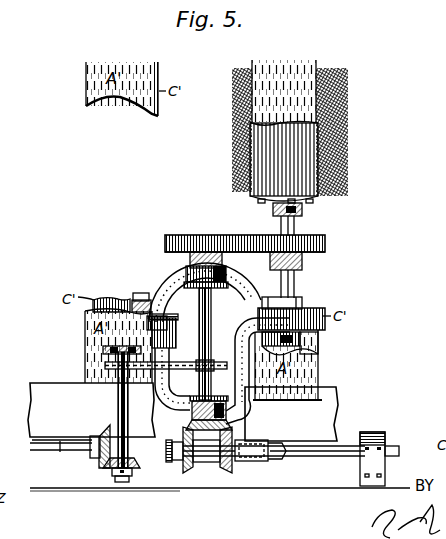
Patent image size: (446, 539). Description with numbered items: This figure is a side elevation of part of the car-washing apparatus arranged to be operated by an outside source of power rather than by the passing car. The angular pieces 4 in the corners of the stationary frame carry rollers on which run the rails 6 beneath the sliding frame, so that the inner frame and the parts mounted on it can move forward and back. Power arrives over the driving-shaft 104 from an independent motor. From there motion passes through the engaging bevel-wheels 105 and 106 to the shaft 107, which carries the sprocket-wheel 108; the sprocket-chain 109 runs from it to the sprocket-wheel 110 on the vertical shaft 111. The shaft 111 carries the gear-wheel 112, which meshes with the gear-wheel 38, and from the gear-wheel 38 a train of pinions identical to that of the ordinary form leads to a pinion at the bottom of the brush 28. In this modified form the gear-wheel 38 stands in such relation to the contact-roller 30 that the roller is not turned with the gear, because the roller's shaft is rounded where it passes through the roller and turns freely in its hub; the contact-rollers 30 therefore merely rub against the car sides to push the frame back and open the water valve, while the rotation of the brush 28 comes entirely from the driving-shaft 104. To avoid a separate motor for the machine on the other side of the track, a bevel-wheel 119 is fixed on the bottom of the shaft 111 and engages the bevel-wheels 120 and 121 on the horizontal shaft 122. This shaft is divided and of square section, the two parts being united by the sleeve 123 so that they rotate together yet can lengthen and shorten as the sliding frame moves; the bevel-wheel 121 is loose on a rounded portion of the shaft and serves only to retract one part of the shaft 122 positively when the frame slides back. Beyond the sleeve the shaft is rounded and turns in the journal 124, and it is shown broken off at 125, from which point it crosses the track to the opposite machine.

The brush 28 is at (332, 121).
The contact-roller 30 is at (335, 197).
The gear-wheel 38 is at (325, 246).
The gear-wheel 112 is at (203, 236).
The shaft 111 is at (212, 327).
The sprocket-wheel 108 is at (105, 361).
The sprocket-chain 109 is at (185, 369).
The sprocket-wheel 110 is at (219, 364).
The shaft 107 is at (129, 405).
The driving-shaft 104 is at (65, 454).
The bevel-wheel 105 is at (97, 466).
The bevel-wheel 106 is at (131, 462).
The bevel-wheel 119 is at (250, 438).
The bevel-wheel 120 is at (228, 474).
The bevel-wheel 121 is at (187, 473).
The horizontal shaft 122 is at (288, 458).
The sleeve 123 is at (329, 440).
The journal 124 is at (372, 431).
The broken-off end of shaft 125 is at (389, 452).
The rail 6 is at (163, 322).
The angular piece 4 is at (176, 340).